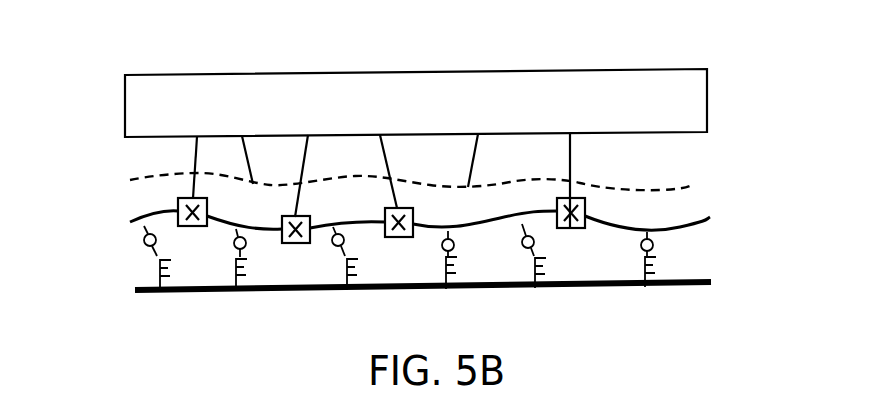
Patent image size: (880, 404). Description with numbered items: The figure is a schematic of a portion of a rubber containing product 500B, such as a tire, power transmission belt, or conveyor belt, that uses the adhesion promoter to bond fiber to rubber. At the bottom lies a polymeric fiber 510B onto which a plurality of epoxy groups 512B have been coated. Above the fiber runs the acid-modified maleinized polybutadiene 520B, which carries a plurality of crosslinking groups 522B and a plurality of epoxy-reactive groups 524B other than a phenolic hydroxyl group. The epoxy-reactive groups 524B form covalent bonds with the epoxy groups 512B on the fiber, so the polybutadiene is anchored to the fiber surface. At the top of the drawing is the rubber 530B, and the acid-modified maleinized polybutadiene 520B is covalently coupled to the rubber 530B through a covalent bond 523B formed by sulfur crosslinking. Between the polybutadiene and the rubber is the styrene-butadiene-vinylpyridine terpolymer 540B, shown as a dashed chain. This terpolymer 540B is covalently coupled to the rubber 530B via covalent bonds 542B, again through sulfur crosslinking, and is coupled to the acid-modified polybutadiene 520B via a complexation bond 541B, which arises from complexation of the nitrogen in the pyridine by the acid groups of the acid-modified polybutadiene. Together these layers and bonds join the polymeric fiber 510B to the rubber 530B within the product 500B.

The product 500B is at (120, 82).
The polymeric fiber 510B is at (710, 278).
The epoxy groups 512B is at (340, 267).
The acid-modified maleinized polybutadiene 520B is at (714, 212).
The crosslinking groups 522B is at (572, 228).
The covalent bond 523B is at (570, 156).
The epoxy-reactive groups 524B is at (247, 249).
The rubber 530B is at (707, 103).
The styrene-butadiene-vinylpyridine terpolymer 540B is at (696, 183).
The complexation bond 541B is at (496, 215).
The covalent bonds 542B is at (470, 148).